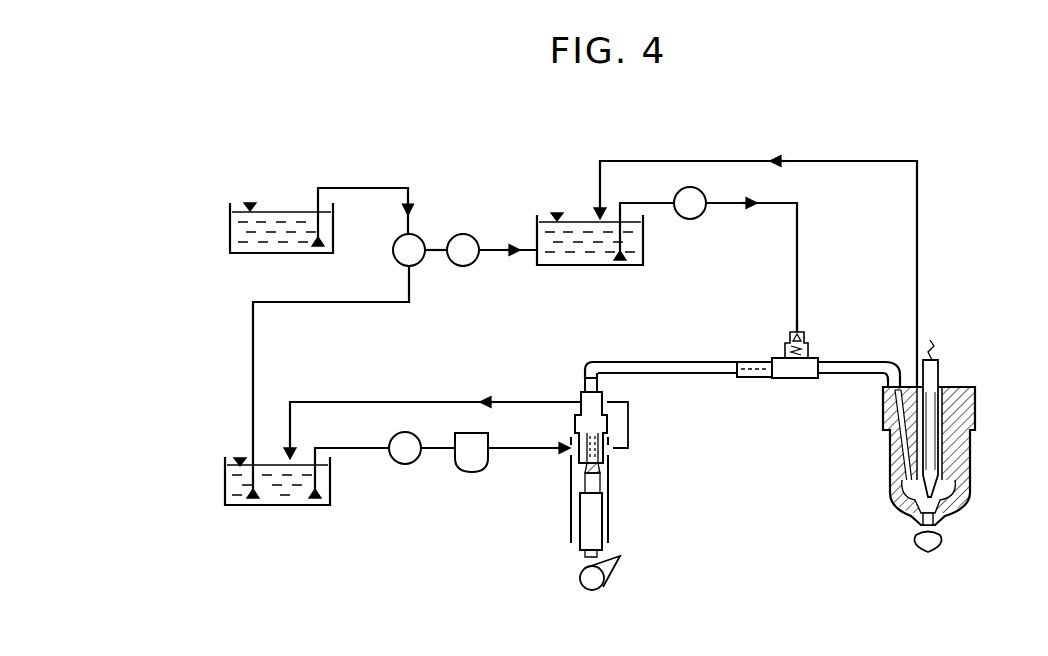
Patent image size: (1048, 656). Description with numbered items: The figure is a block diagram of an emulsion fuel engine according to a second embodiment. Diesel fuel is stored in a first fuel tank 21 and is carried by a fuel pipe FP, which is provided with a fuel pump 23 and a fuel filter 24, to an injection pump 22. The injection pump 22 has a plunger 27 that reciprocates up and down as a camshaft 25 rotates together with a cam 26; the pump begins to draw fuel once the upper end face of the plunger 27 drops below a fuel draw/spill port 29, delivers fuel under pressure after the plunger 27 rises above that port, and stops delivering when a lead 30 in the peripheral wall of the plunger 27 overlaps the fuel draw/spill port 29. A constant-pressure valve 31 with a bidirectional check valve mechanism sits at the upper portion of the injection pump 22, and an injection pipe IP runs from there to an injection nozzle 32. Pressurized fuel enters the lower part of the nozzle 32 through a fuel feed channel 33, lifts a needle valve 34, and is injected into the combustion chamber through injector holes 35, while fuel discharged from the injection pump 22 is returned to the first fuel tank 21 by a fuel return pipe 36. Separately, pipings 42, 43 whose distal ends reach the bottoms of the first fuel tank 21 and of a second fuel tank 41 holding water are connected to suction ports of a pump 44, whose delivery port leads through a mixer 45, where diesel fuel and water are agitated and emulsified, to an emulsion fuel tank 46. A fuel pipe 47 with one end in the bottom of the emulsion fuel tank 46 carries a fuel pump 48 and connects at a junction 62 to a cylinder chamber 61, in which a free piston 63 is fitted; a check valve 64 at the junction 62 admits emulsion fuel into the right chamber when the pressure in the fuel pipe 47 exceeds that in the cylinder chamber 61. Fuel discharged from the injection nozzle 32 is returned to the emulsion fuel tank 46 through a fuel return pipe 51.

The first fuel tank 21 is at (278, 505).
The injection pump 22 is at (573, 523).
The fuel pump 23 is at (405, 464).
The fuel filter 24 is at (472, 472).
The camshaft 25 is at (590, 590).
The cam 26 is at (620, 576).
The plunger 27 is at (605, 531).
The fuel draw/spill port 29 is at (615, 444).
The lead 30 is at (607, 470).
The constant-pressure valve 31 is at (585, 380).
The injection nozzle 32 is at (970, 459).
The fuel feed channel 33 is at (888, 466).
The needle valve 34 is at (975, 424).
The injector holes 35 is at (932, 549).
The fuel return pipe 36 is at (437, 400).
The second fuel tank 41 is at (230, 237).
The piping 42 is at (327, 302).
The piping 43 is at (372, 188).
The pump 44 is at (422, 238).
The mixer 45 is at (476, 238).
The emulsion fuel tank 46 is at (583, 265).
The fuel pipe 47 is at (783, 203).
The fuel pump 48 is at (702, 215).
The fuel return pipe 51 is at (845, 161).
The cylinder chamber 61 is at (800, 378).
The junction 62 is at (810, 345).
The free piston 63 is at (762, 377).
The check valve 64 is at (785, 350).
The injection pipe IP is at (690, 374).
The fuel pipe FP is at (535, 449).